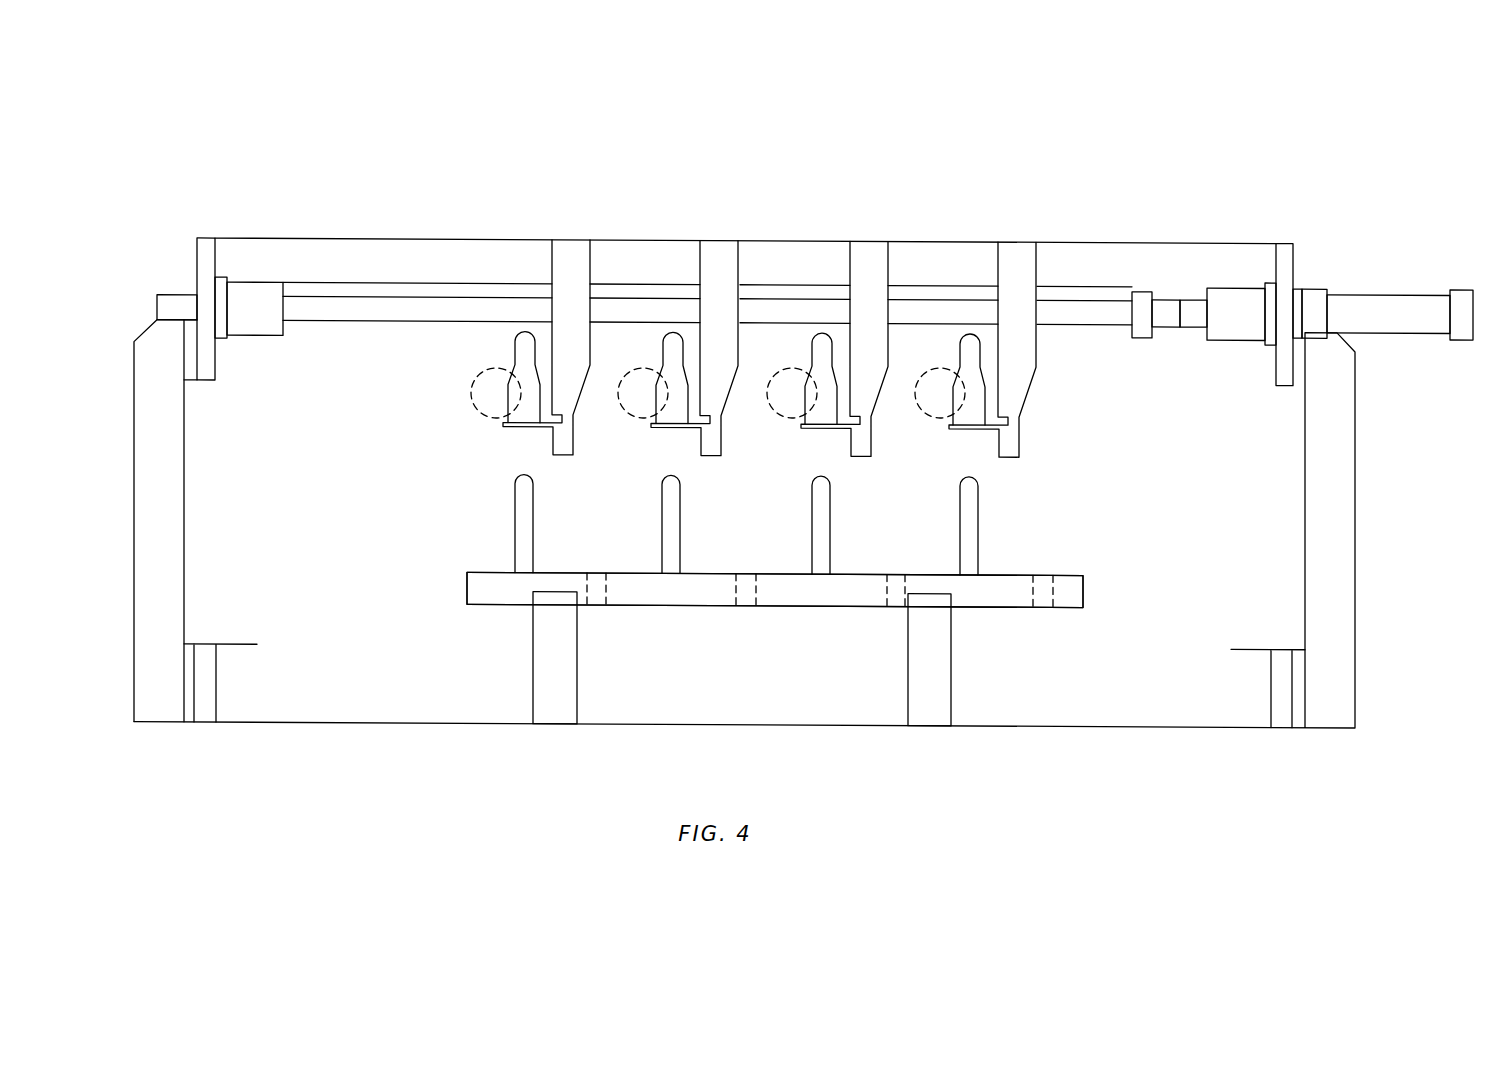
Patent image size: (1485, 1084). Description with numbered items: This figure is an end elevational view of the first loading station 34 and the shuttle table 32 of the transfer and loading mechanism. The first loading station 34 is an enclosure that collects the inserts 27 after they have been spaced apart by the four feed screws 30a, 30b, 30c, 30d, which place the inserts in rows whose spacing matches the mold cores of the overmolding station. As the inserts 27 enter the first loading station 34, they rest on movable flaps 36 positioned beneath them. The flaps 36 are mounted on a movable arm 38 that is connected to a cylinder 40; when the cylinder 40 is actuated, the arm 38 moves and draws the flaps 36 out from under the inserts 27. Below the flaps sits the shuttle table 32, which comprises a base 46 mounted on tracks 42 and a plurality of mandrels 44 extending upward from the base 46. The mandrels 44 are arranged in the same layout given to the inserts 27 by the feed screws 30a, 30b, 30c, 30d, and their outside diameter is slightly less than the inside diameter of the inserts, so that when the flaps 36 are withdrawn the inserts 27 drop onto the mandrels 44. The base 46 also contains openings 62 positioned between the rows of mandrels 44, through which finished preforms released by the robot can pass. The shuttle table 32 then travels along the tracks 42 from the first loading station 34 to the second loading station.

The inserts 27 is at (516, 342).
The feed screw 30a is at (478, 408).
The feed screw 30b is at (619, 405).
The feed screw 30c is at (767, 410).
The feed screw 30d is at (925, 412).
The shuttle table 32 is at (768, 608).
The first loading station 34 is at (997, 215).
The movable flaps 36 is at (582, 267).
The movable arm 38 is at (1082, 322).
The cylinder 40 is at (1400, 330).
The tracks 42 is at (940, 667).
The mandrels 44 is at (515, 507).
The base 46 is at (1079, 588).
The openings 62 is at (606, 592).